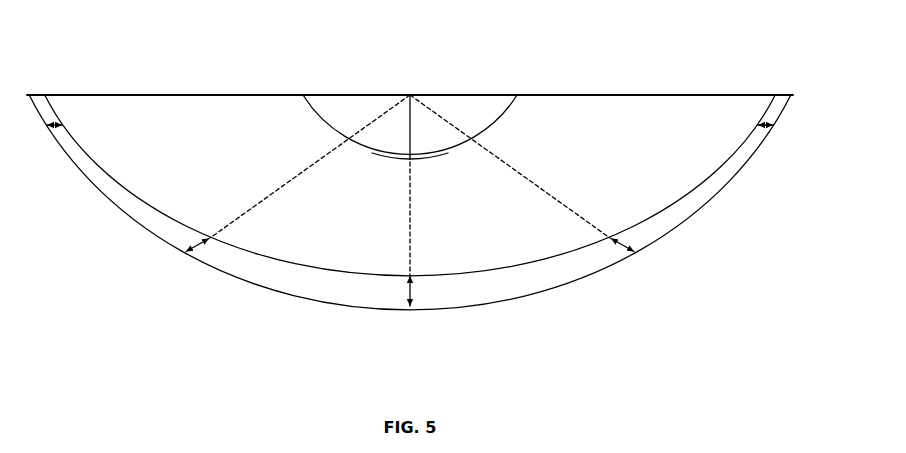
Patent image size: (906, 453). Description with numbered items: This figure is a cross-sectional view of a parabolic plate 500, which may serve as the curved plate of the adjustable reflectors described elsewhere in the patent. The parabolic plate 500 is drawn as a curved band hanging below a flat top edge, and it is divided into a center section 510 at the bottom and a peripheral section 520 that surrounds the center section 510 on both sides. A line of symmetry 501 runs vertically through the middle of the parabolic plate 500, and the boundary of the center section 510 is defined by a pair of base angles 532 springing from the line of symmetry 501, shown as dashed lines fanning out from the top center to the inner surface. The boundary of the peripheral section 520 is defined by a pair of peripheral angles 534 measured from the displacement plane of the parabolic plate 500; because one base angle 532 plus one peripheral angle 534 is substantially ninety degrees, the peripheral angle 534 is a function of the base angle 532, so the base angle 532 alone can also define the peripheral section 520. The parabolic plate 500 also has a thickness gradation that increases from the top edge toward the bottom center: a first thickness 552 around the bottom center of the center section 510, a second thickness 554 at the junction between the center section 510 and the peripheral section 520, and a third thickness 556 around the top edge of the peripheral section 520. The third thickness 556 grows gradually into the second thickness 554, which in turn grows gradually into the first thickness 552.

The parabolic plate 500 is at (723, 80).
The line of symmetry 501 is at (409, 135).
The center section 510 is at (538, 284).
The peripheral section 520 is at (107, 193).
The base angle 532 is at (373, 155).
The peripheral angle 534 is at (318, 112).
The first thickness 552 is at (413, 293).
The second thickness 554 is at (200, 256).
The third thickness 556 is at (58, 128).